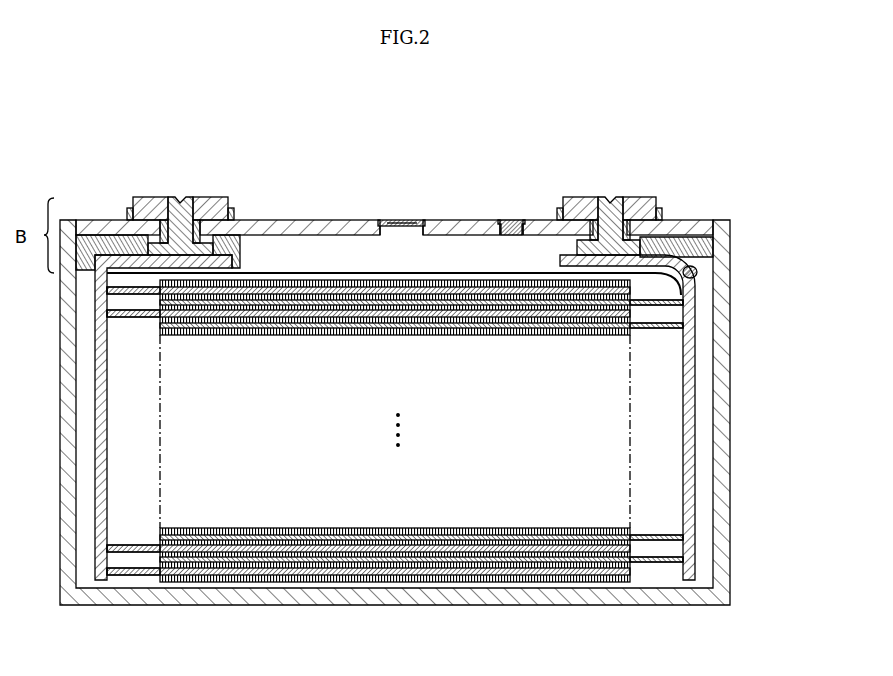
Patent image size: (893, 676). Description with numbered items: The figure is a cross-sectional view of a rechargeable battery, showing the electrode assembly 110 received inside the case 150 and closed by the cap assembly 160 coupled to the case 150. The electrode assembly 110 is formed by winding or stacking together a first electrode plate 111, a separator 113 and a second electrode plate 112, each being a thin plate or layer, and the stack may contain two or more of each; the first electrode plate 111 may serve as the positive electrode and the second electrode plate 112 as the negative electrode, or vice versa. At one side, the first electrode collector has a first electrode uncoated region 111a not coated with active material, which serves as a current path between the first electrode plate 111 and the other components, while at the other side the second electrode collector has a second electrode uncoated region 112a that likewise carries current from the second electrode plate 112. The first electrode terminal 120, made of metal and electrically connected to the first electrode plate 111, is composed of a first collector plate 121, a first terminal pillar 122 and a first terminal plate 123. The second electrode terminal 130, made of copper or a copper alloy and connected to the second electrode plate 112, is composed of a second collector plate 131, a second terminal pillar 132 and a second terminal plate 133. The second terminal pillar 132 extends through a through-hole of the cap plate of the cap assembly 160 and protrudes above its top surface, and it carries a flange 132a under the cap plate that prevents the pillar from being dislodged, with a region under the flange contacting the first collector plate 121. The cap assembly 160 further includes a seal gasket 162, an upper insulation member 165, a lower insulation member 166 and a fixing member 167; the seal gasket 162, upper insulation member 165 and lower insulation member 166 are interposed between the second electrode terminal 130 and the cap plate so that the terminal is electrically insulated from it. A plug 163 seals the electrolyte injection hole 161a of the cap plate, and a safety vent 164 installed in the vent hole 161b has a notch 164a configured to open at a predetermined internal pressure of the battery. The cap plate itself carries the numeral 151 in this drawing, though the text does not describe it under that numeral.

The electrode assembly 110 is at (395, 471).
The first electrode plate 111 is at (556, 578).
The first electrode uncoated region 111a is at (652, 567).
The second electrode plate 112 is at (273, 578).
The second electrode uncoated region 112a is at (140, 573).
The separator 113 is at (420, 580).
The first electrode terminal 120 is at (577, 147).
The first collector plate 121 is at (688, 222).
The first terminal pillar 122 is at (620, 198).
The first terminal plate 123 is at (578, 198).
The second electrode terminal 130 is at (213, 147).
The second collector plate 131 is at (112, 220).
The second terminal pillar 132 is at (173, 197).
The flange 132a is at (240, 257).
The second terminal plate 133 is at (212, 197).
The case 150 is at (730, 393).
The cap plate 151 is at (458, 220).
The cap assembly 160 is at (470, 135).
The electrolyte injection hole 161a is at (507, 238).
The vent hole 161b is at (395, 236).
The seal gasket 162 is at (200, 234).
The plug 163 is at (503, 220).
The safety vent 164 is at (420, 220).
The notch 164a is at (390, 220).
The upper insulation member 165 is at (214, 222).
The lower insulation member 166 is at (90, 235).
The fixing member 167 is at (693, 273).